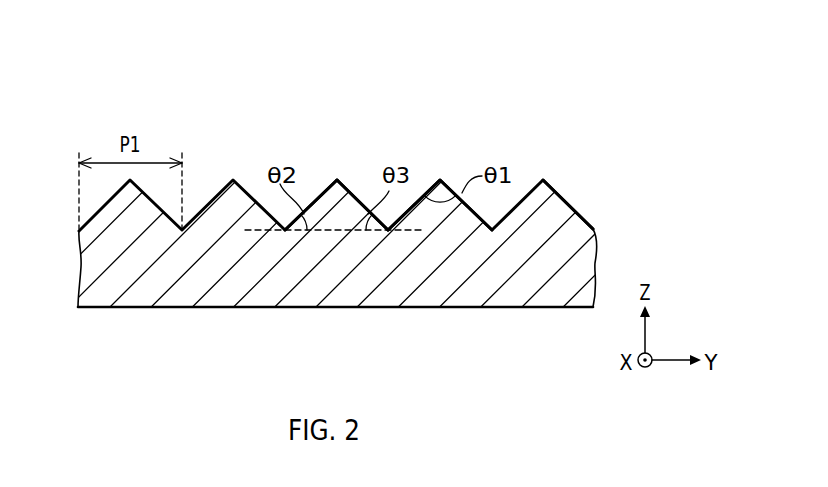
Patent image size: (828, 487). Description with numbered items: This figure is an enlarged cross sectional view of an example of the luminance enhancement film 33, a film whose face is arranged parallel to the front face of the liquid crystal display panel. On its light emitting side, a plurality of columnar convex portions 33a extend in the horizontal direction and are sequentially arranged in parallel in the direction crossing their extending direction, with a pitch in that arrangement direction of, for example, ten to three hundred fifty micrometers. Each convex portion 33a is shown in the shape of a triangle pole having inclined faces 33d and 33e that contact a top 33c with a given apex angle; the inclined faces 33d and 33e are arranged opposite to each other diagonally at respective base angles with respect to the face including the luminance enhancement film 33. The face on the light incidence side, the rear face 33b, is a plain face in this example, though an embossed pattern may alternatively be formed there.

The luminance enhancement film 33 is at (379, 212).
The columnar convex portion 33a is at (560, 198).
The rear face 33b is at (447, 307).
The top 33c is at (442, 178).
The inclined face 33d is at (331, 184).
The inclined face 33e is at (344, 184).